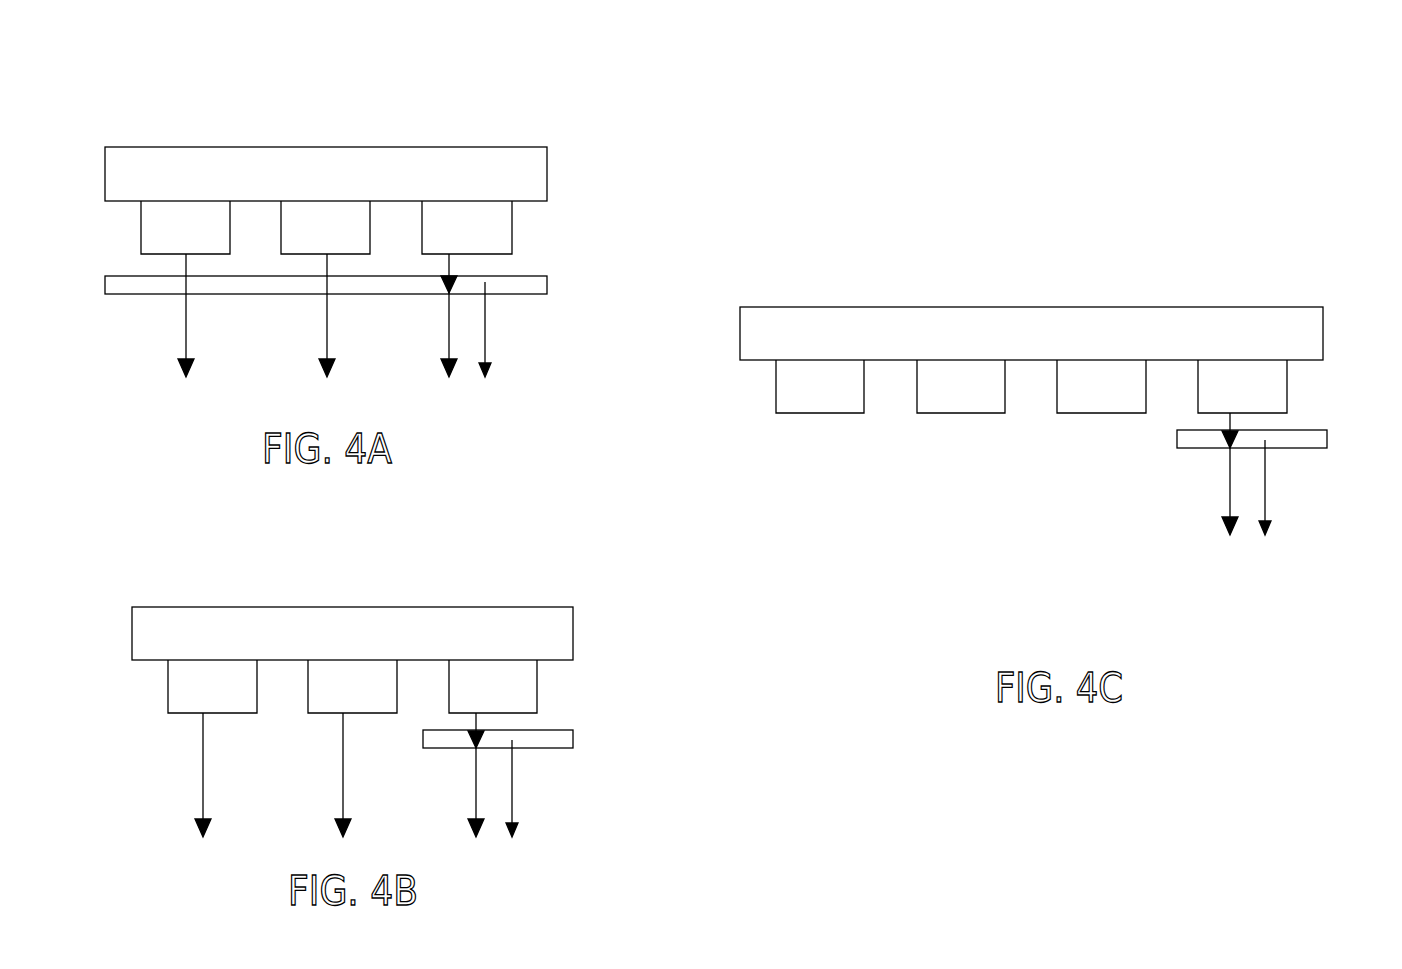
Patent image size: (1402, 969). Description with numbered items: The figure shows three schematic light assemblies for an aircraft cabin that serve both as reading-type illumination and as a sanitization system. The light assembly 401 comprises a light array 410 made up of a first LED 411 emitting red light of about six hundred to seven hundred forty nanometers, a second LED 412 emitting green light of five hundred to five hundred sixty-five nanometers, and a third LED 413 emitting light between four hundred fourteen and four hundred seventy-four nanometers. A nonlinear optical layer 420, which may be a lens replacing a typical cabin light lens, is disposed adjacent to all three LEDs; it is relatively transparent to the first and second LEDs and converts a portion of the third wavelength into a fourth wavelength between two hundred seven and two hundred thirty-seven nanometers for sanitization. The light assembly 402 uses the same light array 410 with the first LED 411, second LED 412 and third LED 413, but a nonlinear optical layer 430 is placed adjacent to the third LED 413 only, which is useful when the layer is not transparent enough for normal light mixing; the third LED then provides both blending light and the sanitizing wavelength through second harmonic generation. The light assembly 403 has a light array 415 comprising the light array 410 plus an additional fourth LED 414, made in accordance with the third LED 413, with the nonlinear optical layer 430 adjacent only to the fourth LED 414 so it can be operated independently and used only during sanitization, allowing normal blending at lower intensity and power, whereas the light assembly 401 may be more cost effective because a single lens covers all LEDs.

In FIG. 4A, the light assembly 401 is at (197, 109).
In FIG. 4B, the light assembly 402 is at (157, 567).
In FIG. 4C, the light assembly 403 is at (889, 232).
In FIG. 4A, the light array 410 is at (561, 228).
In FIG. 4B, the light array 410 is at (614, 659).
In FIG. 4C, the light array 410 is at (818, 442).
In FIG. 4A, the first light emitting diode (LED) 411 is at (177, 237).
In FIG. 4B, the first light emitting diode (LED) 411 is at (212, 697).
In FIG. 4C, the first light emitting diode (LED) 411 is at (800, 383).
In FIG. 4A, the second LED 412 is at (317, 220).
In FIG. 4B, the second LED 412 is at (335, 698).
In FIG. 4C, the second LED 412 is at (940, 377).
In FIG. 4A, the third LED 413 is at (458, 220).
In FIG. 4B, the third LED 413 is at (508, 698).
In FIG. 4C, the third LED 413 is at (1080, 377).
In FIG. 4C, the fourth LED 414 is at (1248, 378).
In FIG. 4C, the light array 415 is at (748, 400).
In FIG. 4A, the nonlinear optical layer 420 is at (125, 285).
In FIG. 4B, the nonlinear optical layer 430 is at (557, 742).
In FIG. 4C, the nonlinear optical layer 430 is at (1303, 440).